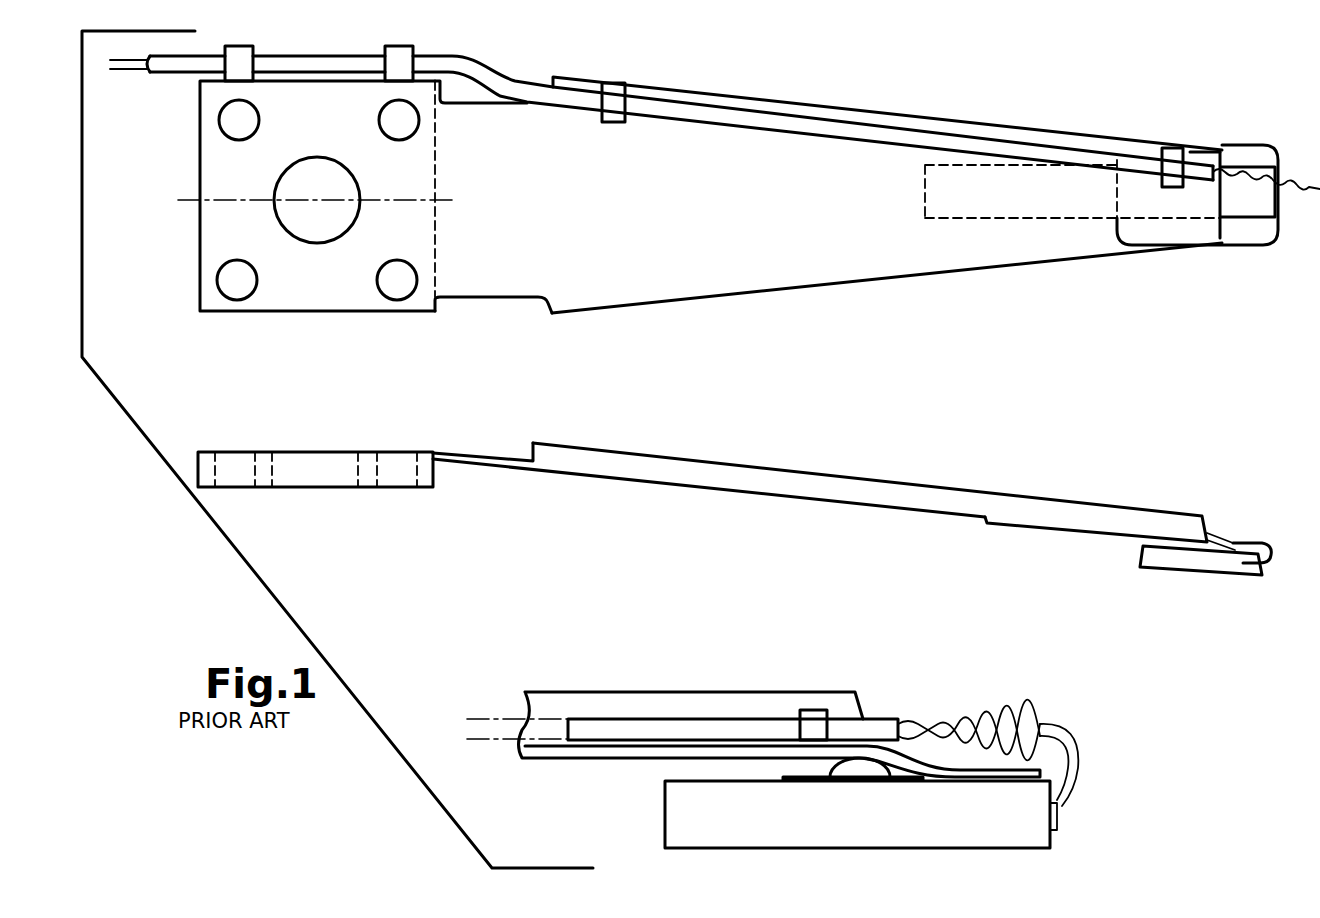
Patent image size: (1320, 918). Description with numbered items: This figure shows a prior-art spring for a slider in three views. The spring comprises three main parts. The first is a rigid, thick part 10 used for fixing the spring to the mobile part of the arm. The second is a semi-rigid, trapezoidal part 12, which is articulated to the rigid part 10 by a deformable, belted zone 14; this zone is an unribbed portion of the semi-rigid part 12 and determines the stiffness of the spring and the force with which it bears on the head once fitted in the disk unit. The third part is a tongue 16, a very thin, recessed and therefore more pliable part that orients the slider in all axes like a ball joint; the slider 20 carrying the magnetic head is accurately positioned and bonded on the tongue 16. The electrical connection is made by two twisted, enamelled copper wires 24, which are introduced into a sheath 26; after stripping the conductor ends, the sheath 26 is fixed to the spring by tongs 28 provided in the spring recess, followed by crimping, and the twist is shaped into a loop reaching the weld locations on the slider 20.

The rigid, thick part 10 is at (328, 278).
The semi-rigid, trapezoidal part 12 is at (798, 230).
The deformable, belted zone 14 is at (460, 245).
The tongue 16 is at (1243, 167).
The slider 20 is at (1240, 240).
The twisted, enamelled copper wires 24 is at (1303, 190).
The sheath 26 is at (896, 130).
The tongs 28 is at (1178, 147).